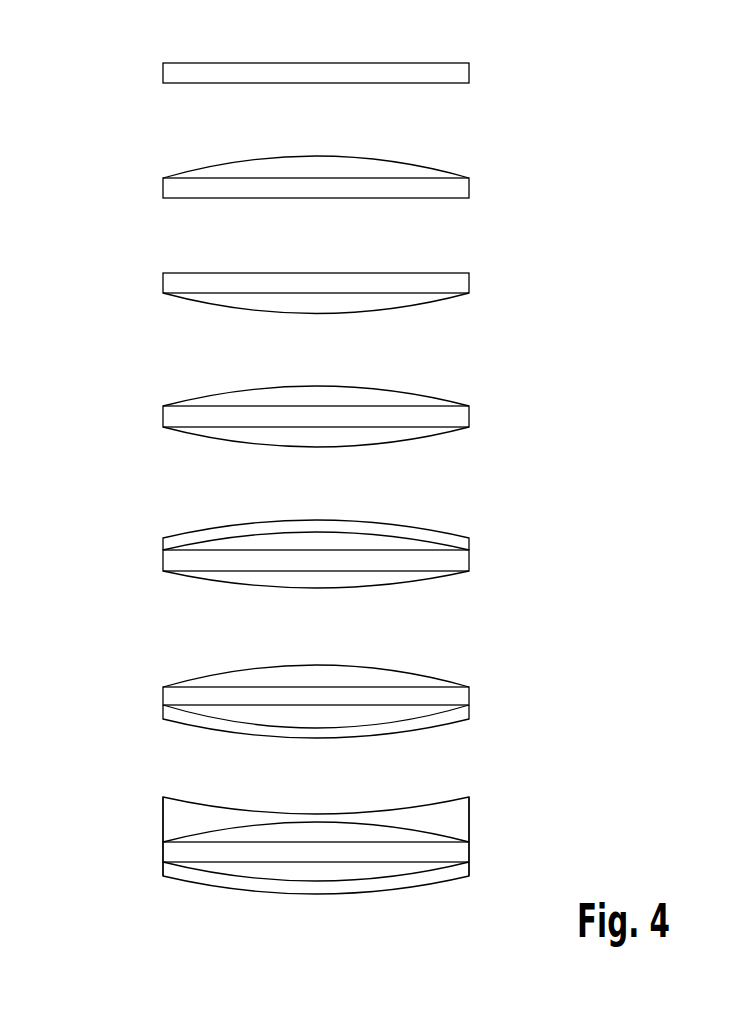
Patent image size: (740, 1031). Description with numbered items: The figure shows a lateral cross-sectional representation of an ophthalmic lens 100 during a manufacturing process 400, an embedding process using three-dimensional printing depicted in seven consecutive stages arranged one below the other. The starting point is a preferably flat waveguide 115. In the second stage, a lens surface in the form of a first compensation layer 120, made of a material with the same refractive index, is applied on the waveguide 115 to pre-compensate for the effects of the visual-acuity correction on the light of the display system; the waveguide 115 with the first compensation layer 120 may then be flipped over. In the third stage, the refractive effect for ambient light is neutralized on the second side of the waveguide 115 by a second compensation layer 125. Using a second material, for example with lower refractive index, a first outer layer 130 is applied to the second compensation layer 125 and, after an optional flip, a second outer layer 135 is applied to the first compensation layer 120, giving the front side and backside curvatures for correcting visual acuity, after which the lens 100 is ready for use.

The manufacturing process 400 is at (146, 64).
The waveguide 115 is at (462, 73).
The first compensation layer 120 is at (216, 175).
The second compensation layer 125 is at (313, 397).
The first outer layer 130 is at (235, 530).
The second outer layer 135 is at (187, 823).
The ophthalmic lens 100 is at (147, 811).